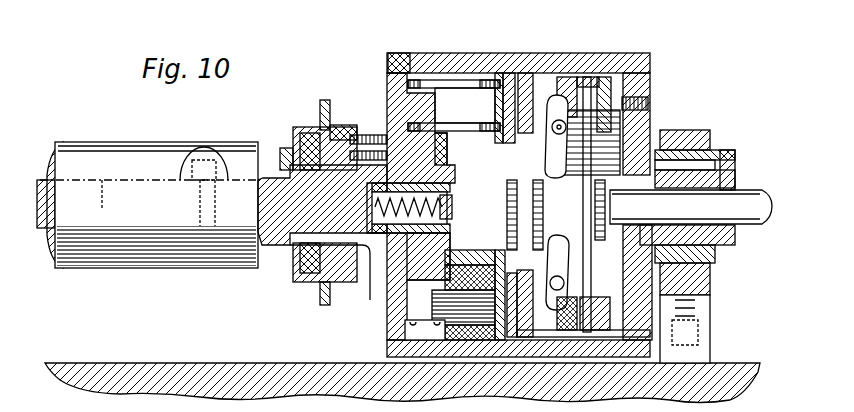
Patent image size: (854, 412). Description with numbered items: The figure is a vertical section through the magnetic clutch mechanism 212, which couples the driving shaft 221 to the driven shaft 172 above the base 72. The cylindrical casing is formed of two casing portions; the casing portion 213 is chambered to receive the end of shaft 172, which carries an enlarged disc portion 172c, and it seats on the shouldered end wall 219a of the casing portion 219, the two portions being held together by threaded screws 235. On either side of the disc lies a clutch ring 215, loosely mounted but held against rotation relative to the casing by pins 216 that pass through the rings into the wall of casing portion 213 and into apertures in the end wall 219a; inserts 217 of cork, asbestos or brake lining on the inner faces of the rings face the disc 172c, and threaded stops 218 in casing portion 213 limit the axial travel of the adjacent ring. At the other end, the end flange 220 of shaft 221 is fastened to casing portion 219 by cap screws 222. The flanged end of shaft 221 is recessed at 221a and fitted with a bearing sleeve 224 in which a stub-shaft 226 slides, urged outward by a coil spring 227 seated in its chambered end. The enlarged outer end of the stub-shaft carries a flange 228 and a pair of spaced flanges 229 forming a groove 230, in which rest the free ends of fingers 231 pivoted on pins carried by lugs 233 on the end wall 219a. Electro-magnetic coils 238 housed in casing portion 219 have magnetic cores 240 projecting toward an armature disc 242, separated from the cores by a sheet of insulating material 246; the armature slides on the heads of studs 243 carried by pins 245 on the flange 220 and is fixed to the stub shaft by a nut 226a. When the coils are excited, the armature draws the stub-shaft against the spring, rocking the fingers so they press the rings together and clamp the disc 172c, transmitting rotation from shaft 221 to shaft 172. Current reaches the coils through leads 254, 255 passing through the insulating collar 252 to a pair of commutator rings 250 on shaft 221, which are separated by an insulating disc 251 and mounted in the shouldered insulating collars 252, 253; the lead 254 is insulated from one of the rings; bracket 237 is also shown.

The base 72 is at (240, 333).
The shaft 172 is at (745, 196).
The enlarged disc portion 172c is at (615, 127).
The magnetic clutch mechanism 212 is at (552, 42).
The casing portion 213 is at (622, 57).
The clutch ring 215 is at (590, 72).
The pins 216 is at (565, 350).
The inserts 217 is at (589, 95).
The threaded stops 218 is at (648, 100).
The casing portion 219 is at (468, 60).
The end wall 219a is at (548, 80).
The end flange 220 is at (383, 300).
The shaft 221 is at (37, 190).
The central recess 221a is at (388, 290).
The cap screws 222 is at (395, 57).
The bearing sleeve 224 is at (468, 156).
The stub-shaft 226 is at (445, 233).
The nut 226a is at (468, 257).
The coil spring 227 is at (372, 207).
The flange 228 is at (524, 155).
The spaced flanges 229 is at (556, 135).
The groove 230 is at (560, 206).
The fingers 231 is at (548, 256).
The lugs 233 is at (498, 340).
The threaded screws 235 is at (648, 357).
The bracket 237 is at (540, 336).
The electro-magnetic coils 238 is at (458, 320).
The magnetic cores 240 is at (420, 340).
The armature disc 242 is at (526, 72).
The studs 243 is at (500, 73).
The pins 245 is at (438, 78).
The sheet of insulating material 246 is at (492, 108).
The commutator rings 250 is at (322, 282).
The insulating disc 251 is at (325, 100).
The insulating collar 252 is at (342, 125).
The insulating collar 253 is at (285, 150).
The lead 254 is at (364, 135).
The lead 255 is at (368, 154).